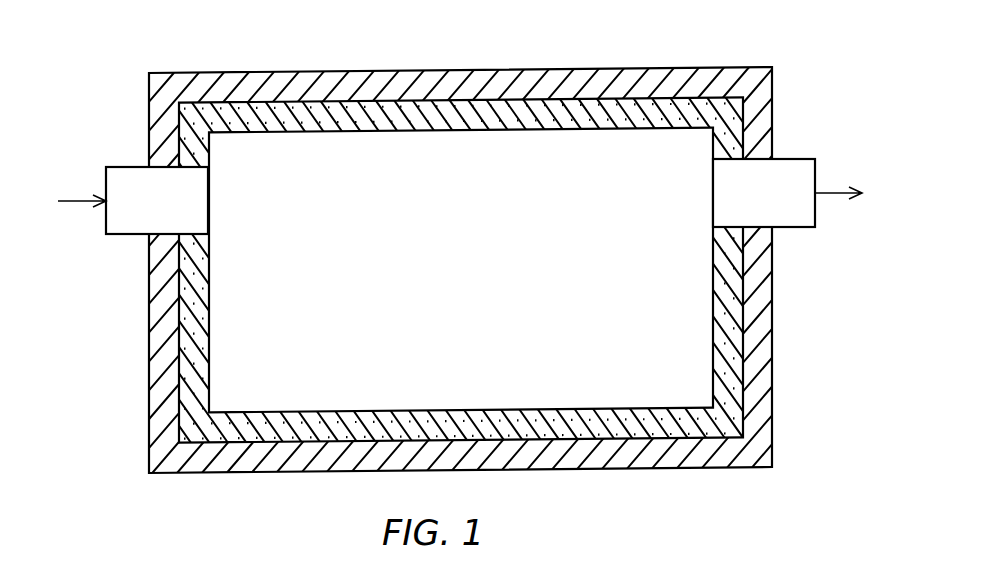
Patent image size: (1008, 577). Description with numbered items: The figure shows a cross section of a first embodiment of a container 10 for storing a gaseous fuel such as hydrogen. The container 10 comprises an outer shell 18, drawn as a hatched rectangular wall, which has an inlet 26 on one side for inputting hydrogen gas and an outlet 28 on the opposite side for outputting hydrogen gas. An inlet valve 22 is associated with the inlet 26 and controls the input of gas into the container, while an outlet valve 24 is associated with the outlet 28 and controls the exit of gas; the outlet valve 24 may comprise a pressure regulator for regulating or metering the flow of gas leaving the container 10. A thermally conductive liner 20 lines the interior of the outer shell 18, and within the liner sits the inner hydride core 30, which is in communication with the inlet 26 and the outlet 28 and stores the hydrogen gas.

The container 10 is at (504, 271).
The outer shell 18 is at (683, 78).
The thermally conductive liner 20 is at (578, 112).
The inlet valve 22 is at (120, 177).
The outlet valve 24 is at (815, 172).
The inlet 26 is at (104, 217).
The outlet 28 is at (816, 212).
The inner hydride core 30 is at (461, 272).